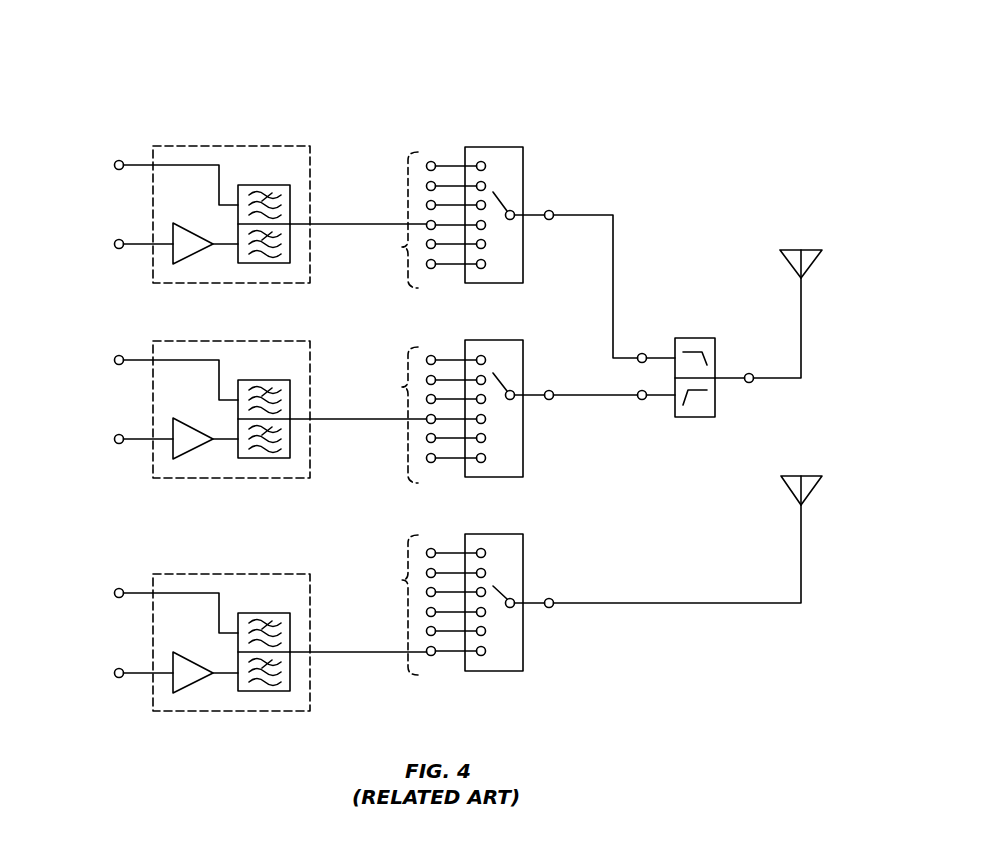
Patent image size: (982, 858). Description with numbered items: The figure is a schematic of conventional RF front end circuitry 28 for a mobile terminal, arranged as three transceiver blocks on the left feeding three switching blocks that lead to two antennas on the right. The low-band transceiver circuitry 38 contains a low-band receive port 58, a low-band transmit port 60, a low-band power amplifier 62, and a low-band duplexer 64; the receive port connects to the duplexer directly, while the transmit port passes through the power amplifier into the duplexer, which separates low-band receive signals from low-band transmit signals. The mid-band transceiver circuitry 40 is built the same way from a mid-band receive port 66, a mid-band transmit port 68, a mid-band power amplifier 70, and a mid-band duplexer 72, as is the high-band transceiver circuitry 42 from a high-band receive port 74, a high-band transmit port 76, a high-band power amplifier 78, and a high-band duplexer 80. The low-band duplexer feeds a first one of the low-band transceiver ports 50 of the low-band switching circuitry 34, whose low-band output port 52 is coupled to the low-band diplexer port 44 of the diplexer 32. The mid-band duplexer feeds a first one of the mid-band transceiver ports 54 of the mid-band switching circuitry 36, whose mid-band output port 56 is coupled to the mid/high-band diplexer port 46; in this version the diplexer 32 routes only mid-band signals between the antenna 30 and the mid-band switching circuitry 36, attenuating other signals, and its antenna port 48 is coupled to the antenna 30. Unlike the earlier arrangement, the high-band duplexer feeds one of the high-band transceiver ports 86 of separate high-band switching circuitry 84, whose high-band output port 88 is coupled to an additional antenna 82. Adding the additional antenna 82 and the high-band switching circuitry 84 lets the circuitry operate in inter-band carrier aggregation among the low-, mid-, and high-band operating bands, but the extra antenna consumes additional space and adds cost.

The conventional RF front end circuitry 28 is at (660, 62).
The antenna 30 is at (808, 249).
The diplexer 32 is at (697, 417).
The low-band switching circuitry 34 is at (457, 202).
The mid-band switching circuitry 36 is at (457, 423).
The low-band transceiver circuitry 38 is at (255, 146).
The mid-band transceiver circuitry 40 is at (255, 341).
The high-band transceiver circuitry 42 is at (255, 574).
The low-band diplexer port 44 is at (642, 352).
The mid/high-band diplexer port 46 is at (642, 402).
The antenna port 48 is at (750, 372).
The low-band transceiver ports 50 is at (402, 247).
The low-band output port 52 is at (550, 210).
The mid-band transceiver ports 54 is at (402, 387).
The mid-band output port 56 is at (550, 390).
The low-band receive port 58 is at (115, 162).
The low-band transmit port 60 is at (115, 241).
The low-band power amplifier 62 is at (190, 236).
The low-band duplexer 64 is at (250, 185).
The mid-band receive port 66 is at (115, 357).
The mid-band transmit port 68 is at (115, 436).
The mid-band power amplifier 70 is at (190, 431).
The mid-band duplexer 72 is at (250, 380).
The high-band receive port 74 is at (115, 590).
The high-band transmit port 76 is at (115, 670).
The high-band power amplifier 78 is at (190, 664).
The high-band duplexer 80 is at (250, 613).
The additional antenna 82 is at (810, 476).
The high-band switching circuitry 84 is at (457, 617).
The high-band transceiver ports 86 is at (402, 580).
The high-band output port 88 is at (550, 598).